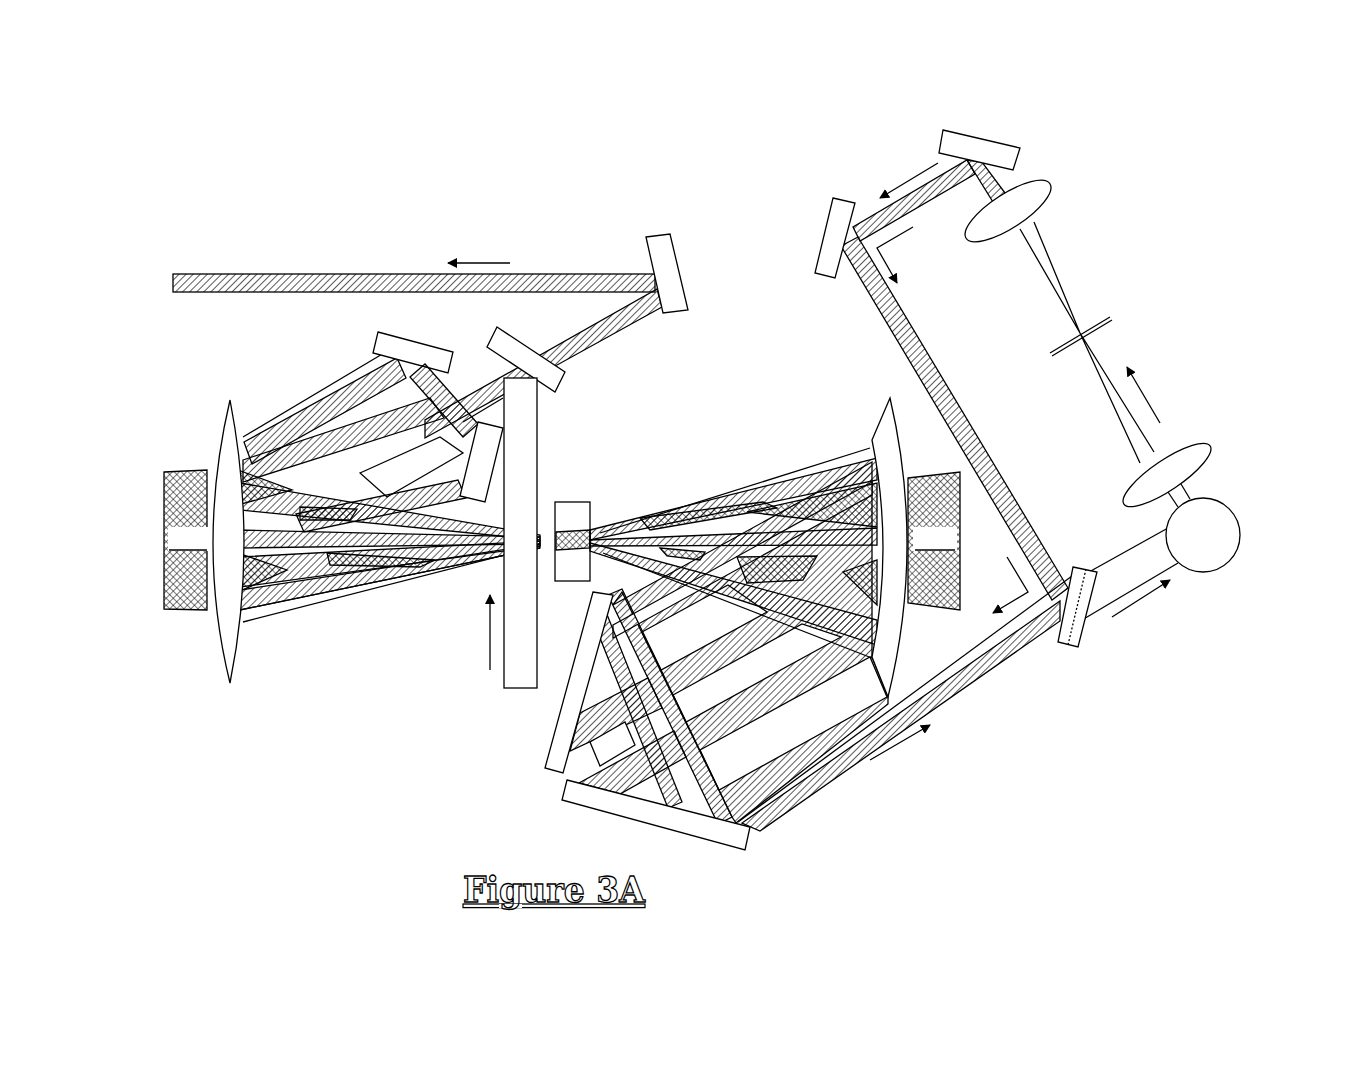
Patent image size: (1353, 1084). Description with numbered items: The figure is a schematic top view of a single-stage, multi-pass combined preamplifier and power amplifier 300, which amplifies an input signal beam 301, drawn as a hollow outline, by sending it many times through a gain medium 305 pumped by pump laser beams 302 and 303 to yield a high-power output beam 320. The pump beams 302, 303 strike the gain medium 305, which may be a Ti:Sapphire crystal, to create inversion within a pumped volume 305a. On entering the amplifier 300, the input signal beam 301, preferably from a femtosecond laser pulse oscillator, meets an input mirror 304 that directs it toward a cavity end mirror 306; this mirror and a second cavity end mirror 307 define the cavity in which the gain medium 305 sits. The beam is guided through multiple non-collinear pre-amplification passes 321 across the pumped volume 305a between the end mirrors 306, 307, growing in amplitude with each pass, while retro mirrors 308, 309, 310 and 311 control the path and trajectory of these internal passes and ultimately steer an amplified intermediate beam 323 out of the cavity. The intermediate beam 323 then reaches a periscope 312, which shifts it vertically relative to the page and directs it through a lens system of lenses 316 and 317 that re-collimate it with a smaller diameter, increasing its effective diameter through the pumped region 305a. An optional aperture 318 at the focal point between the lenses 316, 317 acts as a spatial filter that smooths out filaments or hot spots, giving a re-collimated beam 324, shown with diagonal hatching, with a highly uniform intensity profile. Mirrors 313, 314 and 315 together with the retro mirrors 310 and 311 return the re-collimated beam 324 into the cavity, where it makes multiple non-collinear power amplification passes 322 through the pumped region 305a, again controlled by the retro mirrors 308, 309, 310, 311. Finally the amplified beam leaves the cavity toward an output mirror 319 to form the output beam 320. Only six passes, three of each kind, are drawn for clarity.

The single-stage, multi-pass combined preamplifier and power amplifier 300 is at (378, 110).
The input signal beam 301 is at (504, 683).
The pump laser beam 302 is at (186, 540).
The pump laser beam 303 is at (934, 541).
The input mirror 304 is at (558, 378).
The gain medium 305 is at (590, 504).
The pumped volume 305a is at (578, 536).
The cavity end mirror 306 is at (222, 660).
The cavity end mirror 307 is at (885, 412).
The retro mirror 308 is at (375, 340).
The retro mirror 309 is at (487, 426).
The retro mirror 310 is at (554, 740).
The retro mirror 311 is at (752, 846).
The periscope 312 is at (1243, 527).
The mirror 313 is at (1021, 149).
The mirror 314 is at (828, 230).
The mirror 315 is at (1086, 638).
The lens 316 is at (1216, 453).
The lens 317 is at (1052, 188).
The aperture 318 is at (1114, 319).
The output mirror 319 is at (672, 245).
The output beam 320 is at (297, 274).
The pre-amplification passes 321 is at (282, 612).
The power amplification passes 322 is at (352, 588).
The intermediate beam 323 is at (1193, 487).
The re-collimated beam 324 is at (995, 206).